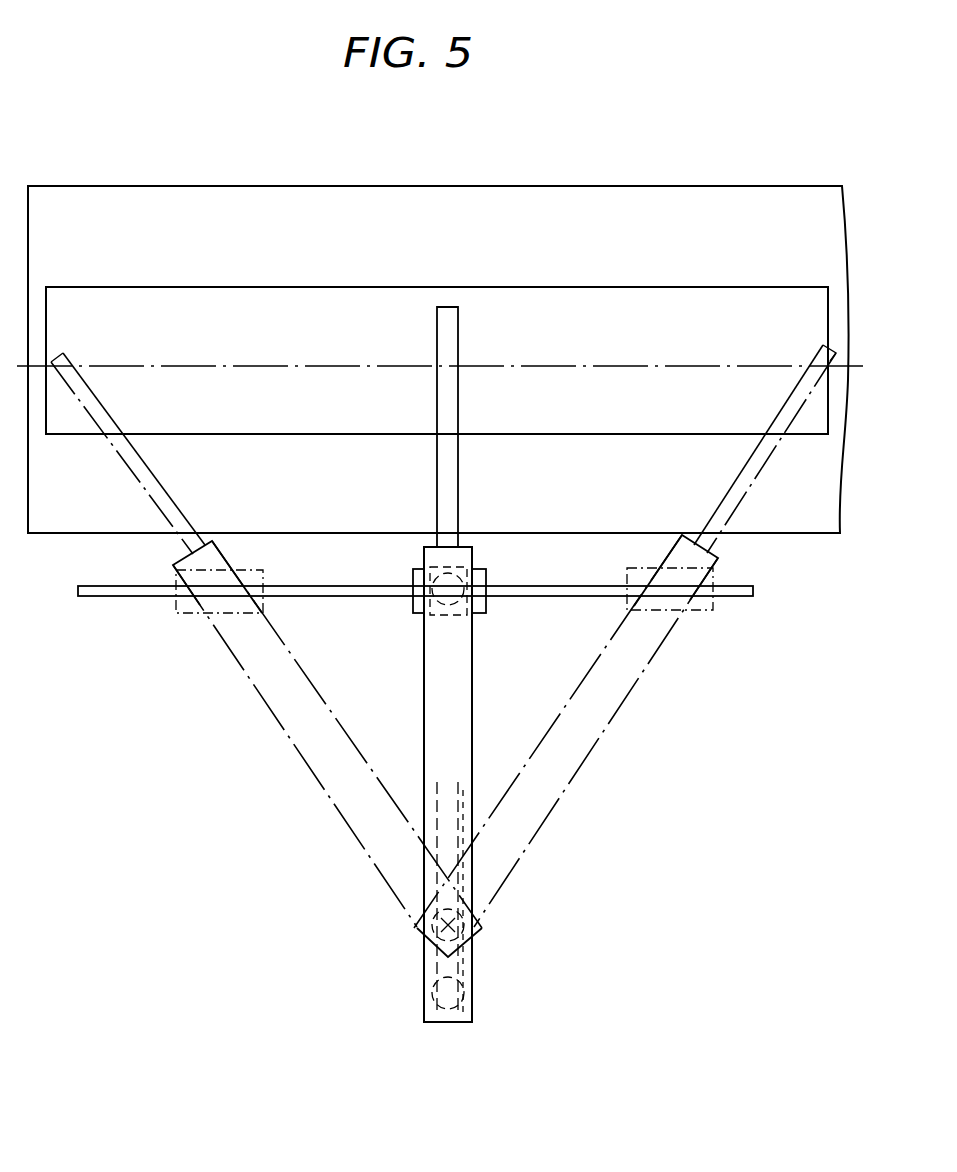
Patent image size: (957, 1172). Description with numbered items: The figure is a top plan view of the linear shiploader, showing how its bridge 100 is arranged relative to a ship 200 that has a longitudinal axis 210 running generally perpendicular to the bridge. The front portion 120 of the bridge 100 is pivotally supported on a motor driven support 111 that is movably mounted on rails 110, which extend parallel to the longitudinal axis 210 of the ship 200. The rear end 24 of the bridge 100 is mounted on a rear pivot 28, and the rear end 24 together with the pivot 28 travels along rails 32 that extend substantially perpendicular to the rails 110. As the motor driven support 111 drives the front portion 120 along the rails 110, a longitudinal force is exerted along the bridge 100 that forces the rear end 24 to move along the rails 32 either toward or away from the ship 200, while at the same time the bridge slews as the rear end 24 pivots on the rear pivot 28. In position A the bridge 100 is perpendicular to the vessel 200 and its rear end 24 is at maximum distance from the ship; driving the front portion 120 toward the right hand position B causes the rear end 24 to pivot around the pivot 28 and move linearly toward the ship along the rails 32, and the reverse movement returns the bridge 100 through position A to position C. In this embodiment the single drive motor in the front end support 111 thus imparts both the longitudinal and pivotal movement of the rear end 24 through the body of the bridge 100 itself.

The ship 200 is at (531, 187).
The longitudinal axis 210 is at (324, 360).
The bridge 100 is at (583, 692).
The rails 110 is at (132, 597).
The front portion 120 is at (474, 553).
The motor driven support 111 is at (413, 577).
The rear end 24 is at (473, 997).
The rear pivot 28 is at (437, 953).
The rails 32 is at (458, 785).
The position A is at (457, 421).
The position B is at (765, 440).
The position C is at (128, 441).